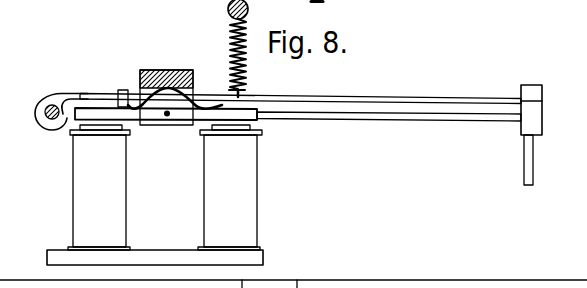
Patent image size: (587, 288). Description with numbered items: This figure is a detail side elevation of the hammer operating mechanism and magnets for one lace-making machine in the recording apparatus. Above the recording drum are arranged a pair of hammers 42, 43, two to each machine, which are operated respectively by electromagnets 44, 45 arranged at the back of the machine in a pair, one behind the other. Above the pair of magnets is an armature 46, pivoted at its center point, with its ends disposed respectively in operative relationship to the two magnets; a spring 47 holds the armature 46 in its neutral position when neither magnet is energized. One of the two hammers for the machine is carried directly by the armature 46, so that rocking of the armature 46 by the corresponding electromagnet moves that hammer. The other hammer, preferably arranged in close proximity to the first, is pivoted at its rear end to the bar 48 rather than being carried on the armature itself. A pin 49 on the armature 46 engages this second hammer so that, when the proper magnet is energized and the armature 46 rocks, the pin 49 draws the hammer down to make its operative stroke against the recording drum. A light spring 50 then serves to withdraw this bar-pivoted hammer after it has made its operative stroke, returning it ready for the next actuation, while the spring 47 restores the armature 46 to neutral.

The hammer 42 is at (403, 118).
The hammer 43 is at (405, 98).
The electromagnet 44 is at (245, 185).
The electromagnet 45 is at (112, 192).
The armature 46 is at (217, 112).
The spring 47 is at (207, 107).
The bar 48 is at (54, 104).
The pin 49 is at (123, 90).
The light spring 50 is at (244, 73).